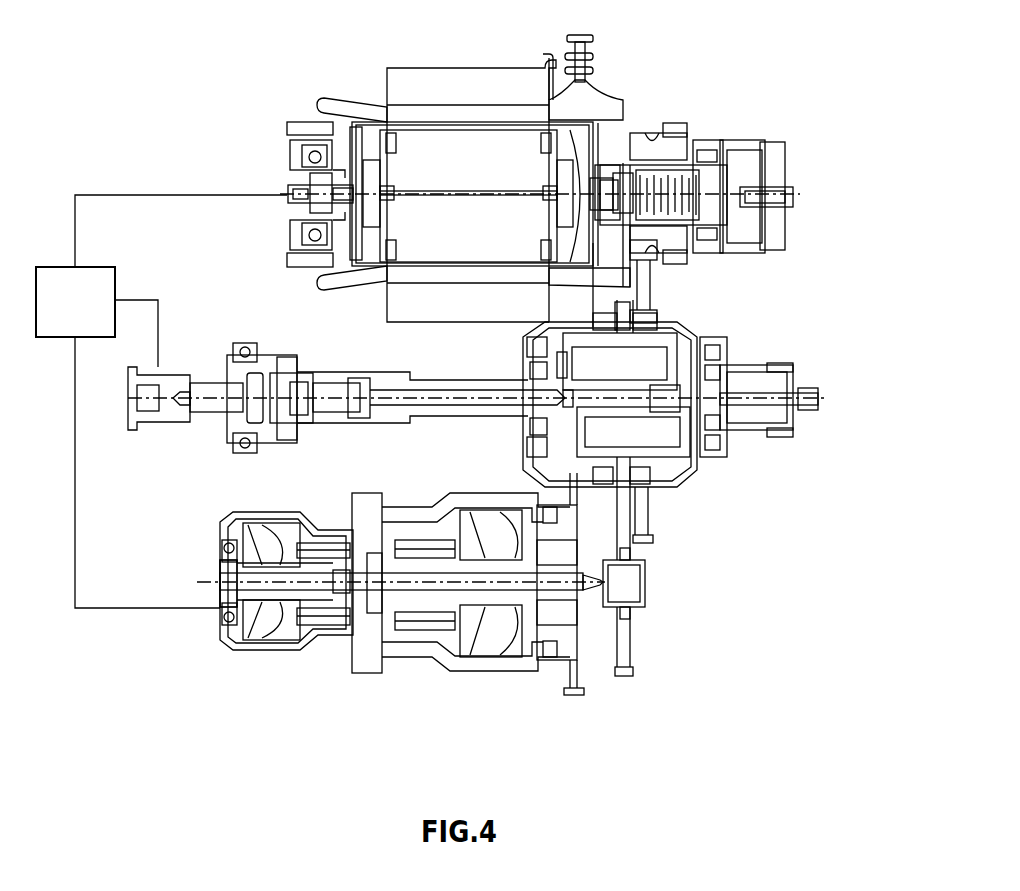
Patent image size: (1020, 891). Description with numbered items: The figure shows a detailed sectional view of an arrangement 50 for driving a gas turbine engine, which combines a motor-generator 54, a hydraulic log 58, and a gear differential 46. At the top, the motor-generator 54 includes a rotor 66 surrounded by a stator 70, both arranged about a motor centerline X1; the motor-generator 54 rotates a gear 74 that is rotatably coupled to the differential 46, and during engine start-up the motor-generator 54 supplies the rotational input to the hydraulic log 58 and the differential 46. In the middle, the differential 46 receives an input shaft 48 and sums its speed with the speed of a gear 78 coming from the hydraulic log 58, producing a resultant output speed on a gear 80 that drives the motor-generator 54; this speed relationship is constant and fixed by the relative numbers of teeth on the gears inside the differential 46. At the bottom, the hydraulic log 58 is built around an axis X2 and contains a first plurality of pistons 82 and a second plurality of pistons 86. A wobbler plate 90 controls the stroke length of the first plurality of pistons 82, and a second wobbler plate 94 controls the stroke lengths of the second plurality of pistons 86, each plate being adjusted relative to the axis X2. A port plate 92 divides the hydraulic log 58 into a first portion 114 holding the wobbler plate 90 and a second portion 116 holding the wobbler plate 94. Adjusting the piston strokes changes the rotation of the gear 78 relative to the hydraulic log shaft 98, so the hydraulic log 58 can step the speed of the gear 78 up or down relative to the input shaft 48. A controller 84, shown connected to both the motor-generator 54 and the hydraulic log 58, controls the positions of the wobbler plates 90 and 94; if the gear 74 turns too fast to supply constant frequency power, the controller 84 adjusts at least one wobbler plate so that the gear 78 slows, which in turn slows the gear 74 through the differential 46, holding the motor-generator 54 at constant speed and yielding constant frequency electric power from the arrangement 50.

The arrangement 50 is at (228, 57).
The stator 70 is at (458, 85).
The rotor 66 is at (495, 152).
The gear 74 is at (650, 133).
The motor-generator 54 is at (745, 175).
The gear 80 is at (650, 287).
The controller 84 is at (92, 315).
The gear differential 46 is at (833, 388).
The input shaft 48 is at (153, 433).
The gear 78 is at (575, 508).
The hydraulic log 58 is at (700, 593).
The hydraulic log shaft 98 is at (575, 588).
The wobbler plate 94 is at (253, 617).
The second plurality of pistons 86 is at (315, 617).
The first plurality of pistons 82 is at (433, 627).
The wobbler plate 90 is at (510, 633).
The port plate 92 is at (365, 673).
The first portion 114 is at (487, 626).
The second portion 116 is at (275, 637).
The motor centerline X1 is at (287, 193).
The axis of the hydraulic log X2 is at (220, 582).